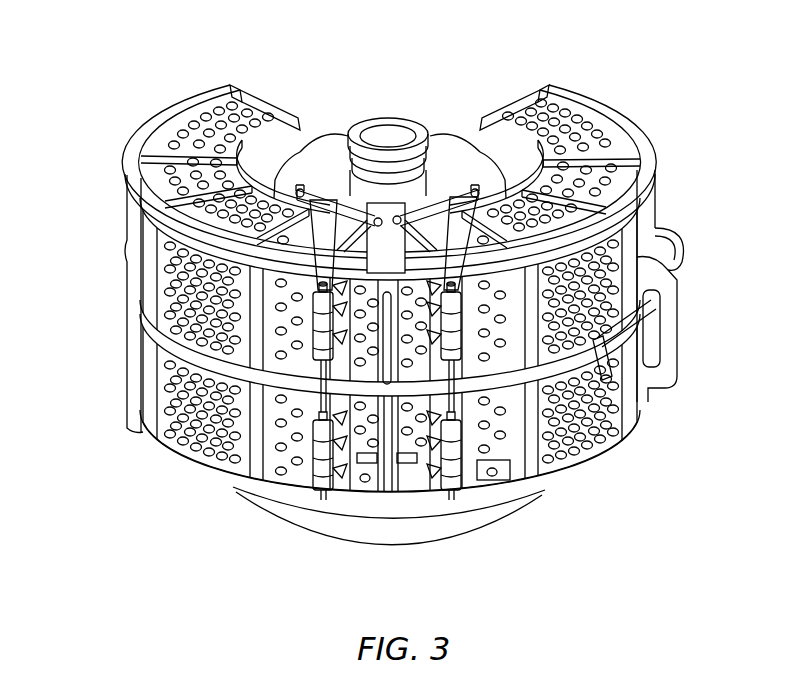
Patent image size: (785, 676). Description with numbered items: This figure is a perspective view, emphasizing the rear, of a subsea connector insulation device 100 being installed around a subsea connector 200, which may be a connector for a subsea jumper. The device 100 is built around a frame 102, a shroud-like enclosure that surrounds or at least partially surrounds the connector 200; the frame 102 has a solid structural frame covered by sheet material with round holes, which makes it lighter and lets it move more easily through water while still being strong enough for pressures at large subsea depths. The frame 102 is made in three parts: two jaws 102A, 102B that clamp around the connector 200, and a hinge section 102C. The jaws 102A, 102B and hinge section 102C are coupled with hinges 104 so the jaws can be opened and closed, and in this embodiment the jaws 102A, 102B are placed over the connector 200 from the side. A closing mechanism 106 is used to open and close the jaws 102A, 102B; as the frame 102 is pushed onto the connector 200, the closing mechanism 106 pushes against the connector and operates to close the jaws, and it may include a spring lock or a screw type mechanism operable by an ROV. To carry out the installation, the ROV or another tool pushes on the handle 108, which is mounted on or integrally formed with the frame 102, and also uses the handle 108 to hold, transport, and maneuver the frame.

The subsea connector insulation device 100 is at (612, 50).
The frame 102 is at (230, 78).
The jaw 102A is at (137, 144).
The jaw 102B is at (649, 157).
The hinge section 102C is at (364, 485).
The hinges 104 is at (320, 478).
The closing mechanism 106 is at (380, 240).
The handle 108 is at (383, 388).
The subsea connector 200 is at (438, 142).